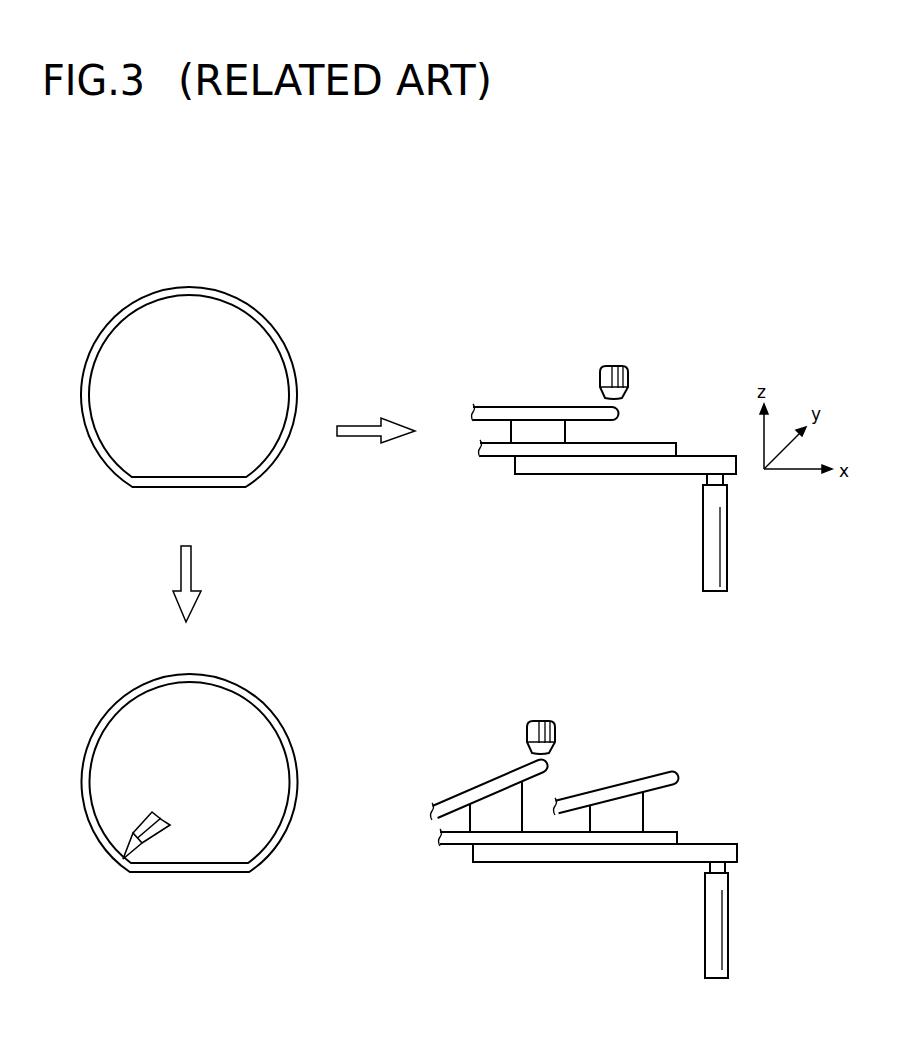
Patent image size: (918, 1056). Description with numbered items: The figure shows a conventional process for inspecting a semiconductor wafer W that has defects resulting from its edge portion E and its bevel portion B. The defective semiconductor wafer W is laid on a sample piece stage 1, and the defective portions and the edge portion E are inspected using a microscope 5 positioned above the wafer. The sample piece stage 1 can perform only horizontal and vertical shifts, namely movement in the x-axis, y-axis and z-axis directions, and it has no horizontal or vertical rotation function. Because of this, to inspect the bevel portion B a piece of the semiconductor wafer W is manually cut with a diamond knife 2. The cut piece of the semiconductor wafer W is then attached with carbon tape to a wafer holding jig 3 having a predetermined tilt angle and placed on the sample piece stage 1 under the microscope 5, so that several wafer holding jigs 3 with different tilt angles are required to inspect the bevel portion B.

The semiconductor wafer W is at (350, 377).
The edge portion E is at (289, 362).
The sample piece stage 1 is at (665, 443).
The microscope 5 is at (630, 382).
The diamond knife 2 is at (158, 834).
The bevel portion B is at (553, 767).
The wafer holding jig 3 is at (608, 817).